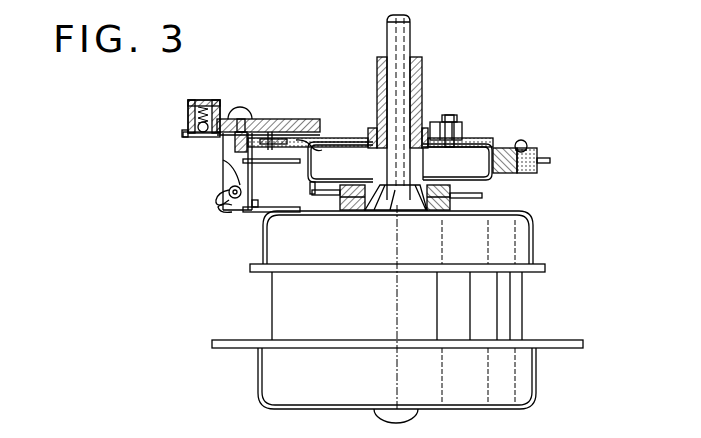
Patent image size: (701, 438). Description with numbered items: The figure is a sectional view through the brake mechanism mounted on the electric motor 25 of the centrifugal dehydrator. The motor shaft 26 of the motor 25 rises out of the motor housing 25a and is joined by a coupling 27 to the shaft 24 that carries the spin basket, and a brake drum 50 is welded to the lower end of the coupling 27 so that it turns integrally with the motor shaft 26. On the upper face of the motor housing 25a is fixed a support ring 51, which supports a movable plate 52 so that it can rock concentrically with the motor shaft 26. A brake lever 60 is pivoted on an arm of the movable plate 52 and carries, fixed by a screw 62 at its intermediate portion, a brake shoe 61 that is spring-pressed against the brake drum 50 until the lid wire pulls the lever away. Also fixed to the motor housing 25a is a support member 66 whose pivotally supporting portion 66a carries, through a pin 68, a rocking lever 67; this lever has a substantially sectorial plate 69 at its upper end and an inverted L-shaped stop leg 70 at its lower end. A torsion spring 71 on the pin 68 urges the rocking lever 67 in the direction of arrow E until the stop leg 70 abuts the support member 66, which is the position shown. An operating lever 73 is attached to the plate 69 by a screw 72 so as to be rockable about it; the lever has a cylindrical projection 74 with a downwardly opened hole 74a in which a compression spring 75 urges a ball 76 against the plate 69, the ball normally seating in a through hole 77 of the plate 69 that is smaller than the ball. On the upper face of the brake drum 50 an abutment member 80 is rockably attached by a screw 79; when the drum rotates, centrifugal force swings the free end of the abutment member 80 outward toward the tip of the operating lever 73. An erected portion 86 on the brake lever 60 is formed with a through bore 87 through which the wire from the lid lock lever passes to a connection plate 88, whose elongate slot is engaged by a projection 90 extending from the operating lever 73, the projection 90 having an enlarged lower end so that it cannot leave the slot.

The shaft 24 is at (411, 30).
The electric motor 25 is at (523, 308).
The motor housing 25a is at (533, 250).
The motor shaft 26 is at (403, 100).
The coupling 27 is at (377, 67).
The brake drum 50 is at (362, 138).
The support ring 51 is at (448, 211).
The movable plate 52 is at (483, 196).
The brake lever 60 is at (543, 163).
The brake shoe 61 is at (512, 145).
The screw 62 is at (528, 148).
The support member 66 is at (277, 213).
The pivotally supporting portion 66a is at (256, 210).
The rocking lever 67 is at (230, 170).
The pin 68 is at (216, 198).
The sectorial plate 69 is at (188, 127).
The stop leg 70 is at (263, 192).
The torsion spring 71 is at (226, 211).
The screw 72 is at (243, 119).
The operating lever 73 is at (290, 120).
The cylindrical projection 74 is at (231, 119).
The hole 74a is at (188, 125).
The compression spring 75 is at (203, 106).
The ball 76 is at (192, 142).
The through hole 77 is at (185, 135).
The screw 79 is at (453, 123).
The abutment member 80 is at (463, 130).
The erected portion 86 is at (315, 137).
The through bore 87 is at (312, 153).
The connection plate 88 is at (270, 163).
The projection 90 is at (262, 139).
The arrow E is at (220, 155).